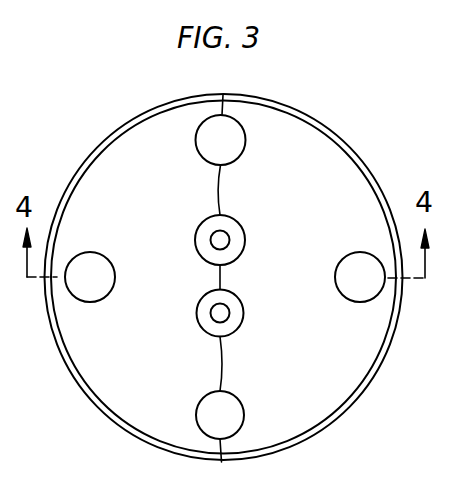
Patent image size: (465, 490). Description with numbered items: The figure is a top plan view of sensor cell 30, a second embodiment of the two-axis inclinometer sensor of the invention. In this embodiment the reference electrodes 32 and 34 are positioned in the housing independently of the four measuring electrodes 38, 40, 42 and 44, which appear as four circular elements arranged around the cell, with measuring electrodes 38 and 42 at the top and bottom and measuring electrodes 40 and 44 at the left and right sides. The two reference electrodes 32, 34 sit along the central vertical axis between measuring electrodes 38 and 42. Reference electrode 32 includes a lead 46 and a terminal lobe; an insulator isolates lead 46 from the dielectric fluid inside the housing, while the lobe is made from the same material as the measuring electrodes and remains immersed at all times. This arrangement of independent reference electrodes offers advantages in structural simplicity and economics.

The sensor cell 30 is at (355, 109).
The reference electrode 32 is at (242, 306).
The reference electrode 34 is at (232, 218).
The measuring electrode 38 is at (236, 120).
The measuring electrode 40 is at (98, 300).
The measuring electrode 42 is at (244, 411).
The measuring electrode 44 is at (378, 295).
The lead 46 is at (210, 240).